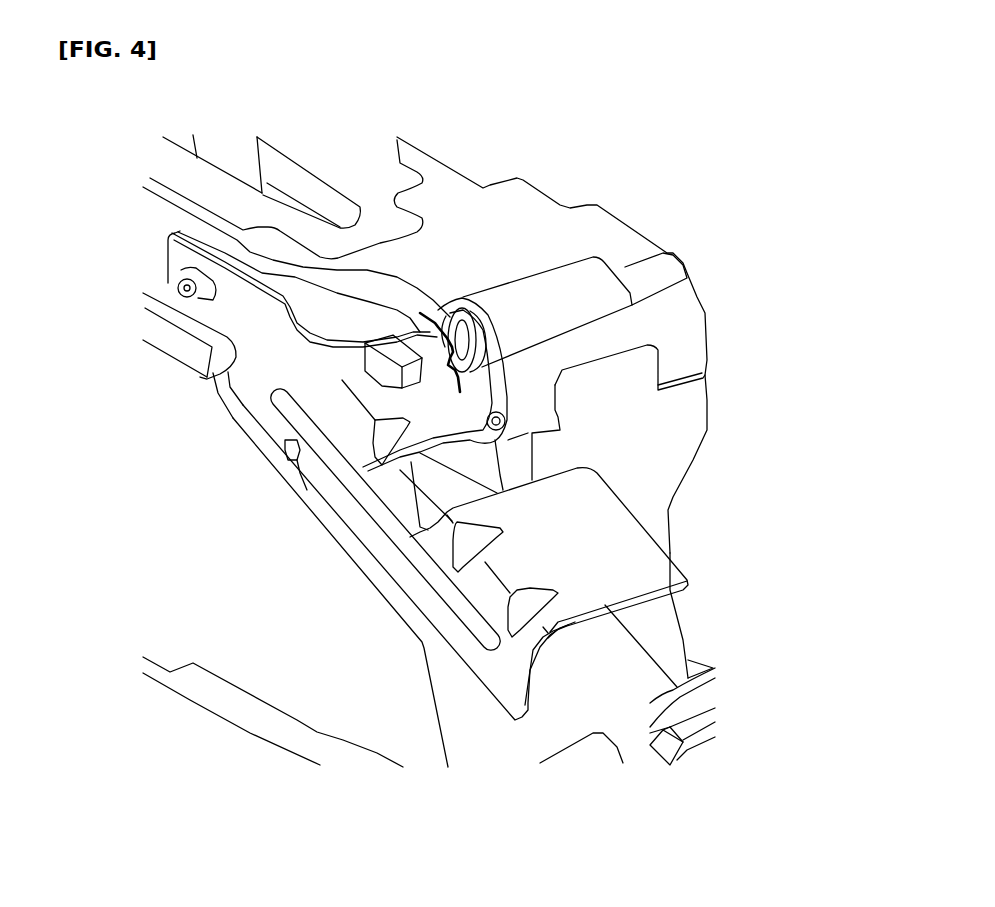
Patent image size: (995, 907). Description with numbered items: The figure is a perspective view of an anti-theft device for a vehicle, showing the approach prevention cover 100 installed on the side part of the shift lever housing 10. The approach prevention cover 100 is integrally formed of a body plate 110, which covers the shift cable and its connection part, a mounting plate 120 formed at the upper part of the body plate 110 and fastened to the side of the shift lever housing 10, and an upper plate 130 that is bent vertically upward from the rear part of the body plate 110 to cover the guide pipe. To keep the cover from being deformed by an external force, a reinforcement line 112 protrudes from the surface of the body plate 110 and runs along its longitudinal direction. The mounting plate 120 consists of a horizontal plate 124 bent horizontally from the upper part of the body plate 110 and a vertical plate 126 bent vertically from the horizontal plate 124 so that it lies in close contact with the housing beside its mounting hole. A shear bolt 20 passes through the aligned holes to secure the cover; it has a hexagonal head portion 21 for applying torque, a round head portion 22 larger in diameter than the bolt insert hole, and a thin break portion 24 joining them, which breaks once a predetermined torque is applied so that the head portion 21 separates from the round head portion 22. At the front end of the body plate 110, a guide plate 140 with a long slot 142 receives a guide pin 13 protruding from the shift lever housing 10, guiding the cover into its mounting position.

The shift lever housing 10 is at (627, 219).
The guide pin 13 is at (182, 294).
The shear bolt 20 is at (415, 320).
The head portion for applying torque 21 is at (373, 360).
The round head portion 22 is at (450, 343).
The break portion 24 is at (461, 318).
The approach prevention cover 100 is at (379, 543).
The body plate 110 is at (320, 488).
The reinforcement line 112 is at (303, 430).
The mounting plate 120 is at (784, 309).
The horizontal plate 124 is at (447, 413).
The vertical plate 126 is at (500, 358).
The upper plate 130 is at (603, 523).
The guide plate 140 is at (223, 323).
The slot 142 is at (185, 312).